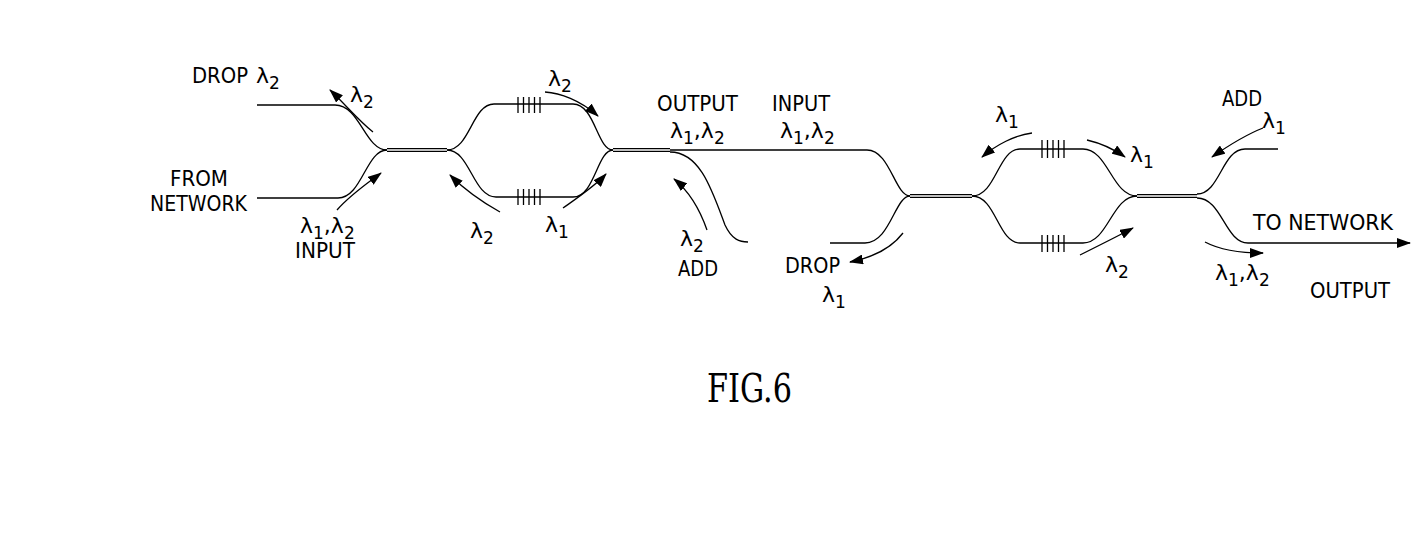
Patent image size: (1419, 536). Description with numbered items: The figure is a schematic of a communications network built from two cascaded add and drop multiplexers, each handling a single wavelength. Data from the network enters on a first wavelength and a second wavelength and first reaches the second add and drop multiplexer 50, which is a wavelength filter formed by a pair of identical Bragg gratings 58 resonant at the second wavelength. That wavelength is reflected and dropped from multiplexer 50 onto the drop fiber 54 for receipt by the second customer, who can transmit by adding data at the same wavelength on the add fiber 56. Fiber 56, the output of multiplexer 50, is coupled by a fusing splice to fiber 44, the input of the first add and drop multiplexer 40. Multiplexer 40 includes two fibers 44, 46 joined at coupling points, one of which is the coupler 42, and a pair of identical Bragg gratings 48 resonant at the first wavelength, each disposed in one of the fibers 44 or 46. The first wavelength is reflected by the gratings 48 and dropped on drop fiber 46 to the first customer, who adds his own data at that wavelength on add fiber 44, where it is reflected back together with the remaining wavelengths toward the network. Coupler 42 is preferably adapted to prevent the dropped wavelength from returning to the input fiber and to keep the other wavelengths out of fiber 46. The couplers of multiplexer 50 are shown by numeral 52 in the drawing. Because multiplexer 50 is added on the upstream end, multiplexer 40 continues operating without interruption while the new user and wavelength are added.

The add and drop multiplexer 40 is at (1120, 219).
The coupler 42 is at (942, 198).
The fiber 44 is at (1074, 142).
The fiber 46 is at (1072, 253).
The Bragg gratings 48 is at (1043, 157).
The add and drop multiplexer 50 is at (583, 174).
The optical coupler 52 is at (415, 147).
The fiber 54 is at (478, 118).
The fiber 56 is at (546, 200).
The Bragg gratings 58 is at (518, 110).